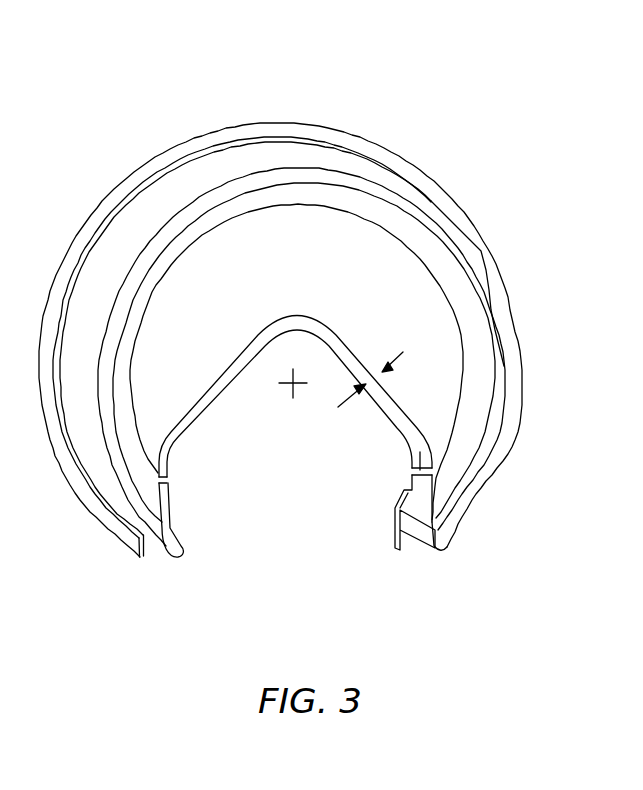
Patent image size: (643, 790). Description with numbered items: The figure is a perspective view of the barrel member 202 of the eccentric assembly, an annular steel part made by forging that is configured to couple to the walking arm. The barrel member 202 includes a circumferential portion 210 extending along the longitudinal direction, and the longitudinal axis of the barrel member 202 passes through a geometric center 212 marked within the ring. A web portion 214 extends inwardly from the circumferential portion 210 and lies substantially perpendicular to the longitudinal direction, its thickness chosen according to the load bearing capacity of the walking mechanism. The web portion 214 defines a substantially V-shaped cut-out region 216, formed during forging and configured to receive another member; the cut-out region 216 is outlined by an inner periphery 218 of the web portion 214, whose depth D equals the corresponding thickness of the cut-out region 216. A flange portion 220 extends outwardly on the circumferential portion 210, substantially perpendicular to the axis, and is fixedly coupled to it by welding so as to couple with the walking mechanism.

The barrel member 202 is at (436, 133).
The circumferential portion 210 is at (282, 158).
The geometric center 212 is at (287, 387).
The web portion 214 is at (417, 328).
The cut-out region 216 is at (307, 440).
The inner periphery 218 is at (432, 477).
The flange portion 220 is at (217, 128).